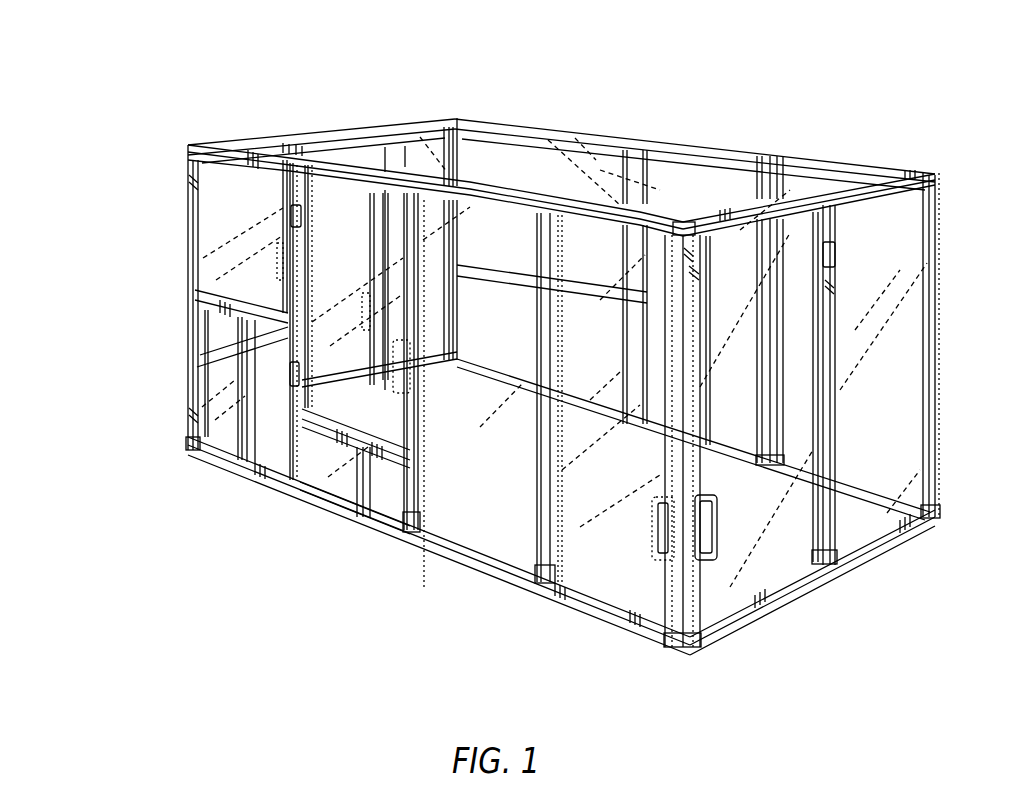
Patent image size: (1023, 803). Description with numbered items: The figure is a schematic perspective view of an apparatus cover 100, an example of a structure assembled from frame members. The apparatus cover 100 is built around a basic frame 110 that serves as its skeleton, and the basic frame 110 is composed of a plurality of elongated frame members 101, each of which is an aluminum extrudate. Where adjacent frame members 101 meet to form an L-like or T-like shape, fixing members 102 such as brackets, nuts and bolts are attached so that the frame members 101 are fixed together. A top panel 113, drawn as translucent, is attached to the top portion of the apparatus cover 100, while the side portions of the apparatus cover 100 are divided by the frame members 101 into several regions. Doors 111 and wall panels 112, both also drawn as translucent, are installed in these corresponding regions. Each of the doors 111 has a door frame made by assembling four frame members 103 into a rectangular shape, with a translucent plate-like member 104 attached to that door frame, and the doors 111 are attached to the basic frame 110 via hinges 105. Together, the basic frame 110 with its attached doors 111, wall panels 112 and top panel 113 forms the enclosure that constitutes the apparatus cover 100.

The apparatus cover 100 is at (664, 102).
The frame member 101 is at (537, 124).
The fixing member 102 is at (411, 536).
The frame member 103 is at (583, 523).
The plate-like member 104 is at (641, 464).
The hinge 105 is at (543, 533).
The basic frame 110 is at (265, 110).
The door 111 is at (629, 546).
The wall panel 112 is at (886, 263).
The top panel 113 is at (701, 191).